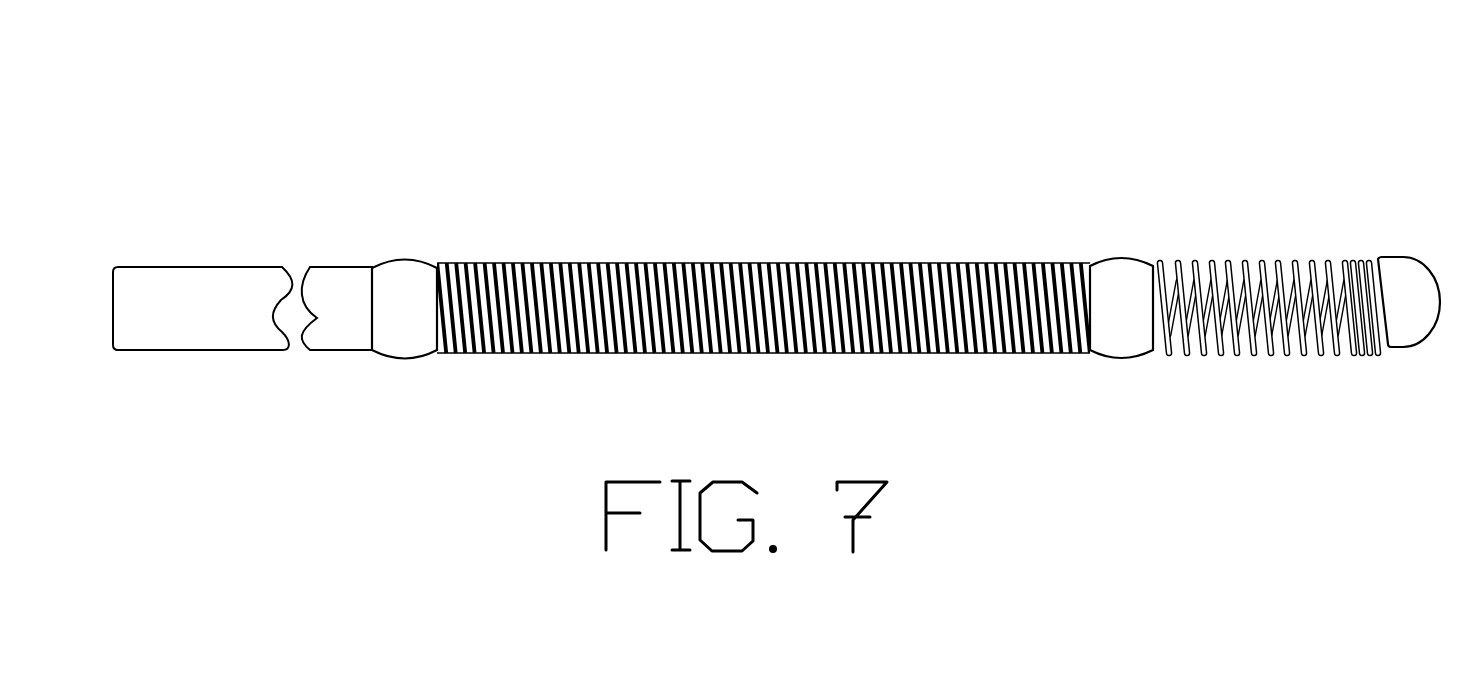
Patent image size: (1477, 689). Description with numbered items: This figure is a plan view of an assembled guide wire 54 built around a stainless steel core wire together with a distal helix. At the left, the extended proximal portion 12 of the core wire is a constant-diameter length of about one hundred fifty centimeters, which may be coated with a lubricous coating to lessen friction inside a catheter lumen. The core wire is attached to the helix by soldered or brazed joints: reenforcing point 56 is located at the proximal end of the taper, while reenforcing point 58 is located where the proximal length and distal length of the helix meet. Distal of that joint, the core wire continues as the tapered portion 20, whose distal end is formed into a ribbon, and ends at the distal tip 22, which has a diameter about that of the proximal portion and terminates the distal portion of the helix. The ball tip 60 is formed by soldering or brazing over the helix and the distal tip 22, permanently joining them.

The guide wire 54 is at (790, 118).
The extended proximal portion 12 is at (330, 277).
The reenforcing point 56 is at (413, 275).
The reenforcing point 58 is at (1125, 280).
The tapered portion 20 is at (1260, 273).
The distal tip 22 is at (1357, 275).
The ball tip 60 is at (1420, 273).